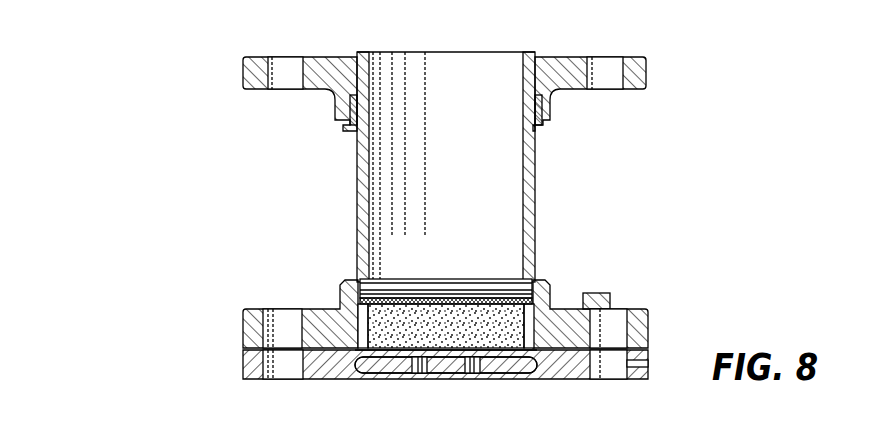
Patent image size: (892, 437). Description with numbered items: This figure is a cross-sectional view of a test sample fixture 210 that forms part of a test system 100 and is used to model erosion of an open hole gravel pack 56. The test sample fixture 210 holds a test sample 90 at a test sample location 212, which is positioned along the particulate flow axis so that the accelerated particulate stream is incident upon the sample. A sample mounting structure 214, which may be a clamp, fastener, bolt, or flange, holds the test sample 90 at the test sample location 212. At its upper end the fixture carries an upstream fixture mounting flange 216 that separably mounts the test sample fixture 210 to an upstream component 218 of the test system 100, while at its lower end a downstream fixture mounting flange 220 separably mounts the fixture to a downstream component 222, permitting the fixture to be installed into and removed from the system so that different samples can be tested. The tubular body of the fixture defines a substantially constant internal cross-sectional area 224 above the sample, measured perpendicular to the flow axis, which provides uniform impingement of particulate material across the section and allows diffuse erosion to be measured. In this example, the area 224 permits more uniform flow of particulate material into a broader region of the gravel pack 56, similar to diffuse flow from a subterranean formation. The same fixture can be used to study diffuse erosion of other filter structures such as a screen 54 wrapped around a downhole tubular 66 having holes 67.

The test system 100 is at (100, 141).
The test sample fixture 210 is at (225, 197).
The test sample location 212 is at (392, 387).
The sample mounting structure 214 is at (362, 340).
The upstream fixture mounting flange 216 is at (243, 68).
The upstream component 218 is at (216, 10).
The downstream fixture mounting flange 220 is at (243, 318).
The downstream component 222 is at (218, 402).
The constant internal cross-sectional area 224 is at (366, 180).
The screen 54 is at (432, 298).
The gravel pack 56 is at (475, 306).
The downhole tubular 66 is at (448, 375).
The holes 67 is at (418, 375).
The test sample 90 is at (498, 387).